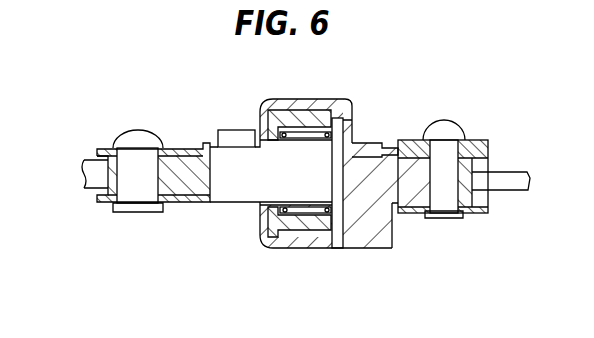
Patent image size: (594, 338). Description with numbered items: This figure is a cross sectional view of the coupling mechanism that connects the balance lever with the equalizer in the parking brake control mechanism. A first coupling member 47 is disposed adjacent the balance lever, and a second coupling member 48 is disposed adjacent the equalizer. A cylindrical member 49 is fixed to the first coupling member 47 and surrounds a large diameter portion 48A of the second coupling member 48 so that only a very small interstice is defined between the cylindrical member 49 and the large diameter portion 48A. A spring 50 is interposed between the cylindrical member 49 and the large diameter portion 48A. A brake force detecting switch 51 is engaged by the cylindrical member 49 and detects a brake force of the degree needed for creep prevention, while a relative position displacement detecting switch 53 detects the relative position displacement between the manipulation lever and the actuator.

The first coupling member 47 is at (312, 105).
The second coupling member 48 is at (210, 197).
The large diameter portion 48A is at (333, 226).
The cylindrical member 49 is at (284, 232).
The spring 50 is at (342, 132).
The brake force detecting switch 51 is at (230, 138).
The relative position displacement detecting switch 53 is at (383, 140).